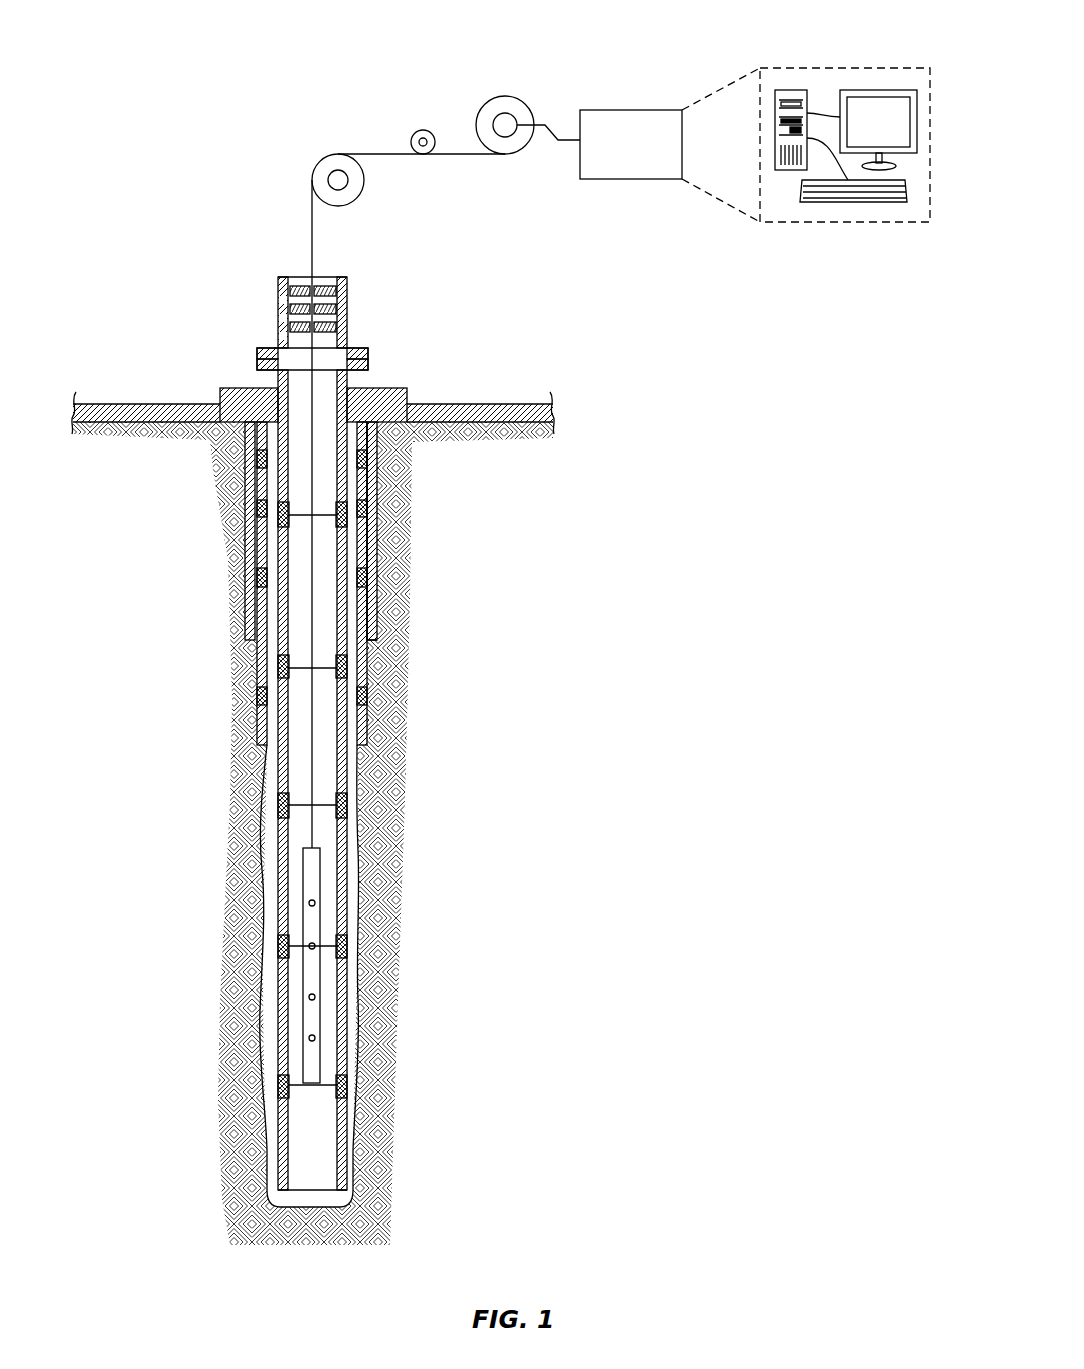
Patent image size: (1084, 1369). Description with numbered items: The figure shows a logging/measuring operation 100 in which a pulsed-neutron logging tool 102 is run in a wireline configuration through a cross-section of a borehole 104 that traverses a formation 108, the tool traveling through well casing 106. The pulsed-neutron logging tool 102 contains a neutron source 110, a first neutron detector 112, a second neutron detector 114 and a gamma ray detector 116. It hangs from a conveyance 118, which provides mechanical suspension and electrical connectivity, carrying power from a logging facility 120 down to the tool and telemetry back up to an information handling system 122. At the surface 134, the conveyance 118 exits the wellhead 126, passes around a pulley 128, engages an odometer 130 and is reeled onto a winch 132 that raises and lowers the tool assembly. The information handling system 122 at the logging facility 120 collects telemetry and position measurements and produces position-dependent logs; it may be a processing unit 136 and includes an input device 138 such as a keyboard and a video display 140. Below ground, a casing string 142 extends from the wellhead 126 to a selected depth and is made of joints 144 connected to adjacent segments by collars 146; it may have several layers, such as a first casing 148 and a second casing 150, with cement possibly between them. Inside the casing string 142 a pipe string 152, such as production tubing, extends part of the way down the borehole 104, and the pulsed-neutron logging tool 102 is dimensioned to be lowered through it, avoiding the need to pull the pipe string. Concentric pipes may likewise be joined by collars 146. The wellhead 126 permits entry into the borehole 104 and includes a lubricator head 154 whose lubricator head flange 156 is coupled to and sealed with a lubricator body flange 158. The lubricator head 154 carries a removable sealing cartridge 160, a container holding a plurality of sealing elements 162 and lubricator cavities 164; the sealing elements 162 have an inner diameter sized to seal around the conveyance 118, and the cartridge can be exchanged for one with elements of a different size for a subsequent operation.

The logging/measuring operation 100 is at (699, 1060).
The pulsed-neutron logging tool 102 is at (312, 984).
The borehole 104 is at (212, 802).
The well casing 106 is at (358, 752).
The formation 108 is at (544, 675).
The neutron source 110 is at (316, 903).
The first neutron detector 112 is at (316, 946).
The second neutron detector 114 is at (316, 997).
The gamma ray detector 116 is at (316, 1038).
The conveyance 118 is at (313, 252).
The logging facility 120 is at (806, 137).
The information handling system 122 is at (640, 110).
The wellhead 126 is at (367, 334).
The pulley 128 is at (314, 168).
The odometer 130 is at (424, 130).
The winch 132 is at (520, 97).
The surface 134 is at (125, 403).
The processing unit 136 is at (790, 90).
The input device 138 is at (850, 202).
The video display 140 is at (878, 90).
The casing string 142 is at (243, 636).
The joint 144 is at (258, 660).
The collar 146 is at (258, 697).
The first casing 148 is at (364, 663).
The second casing 150 is at (372, 618).
The pipe string 152 is at (349, 1148).
The lubricator head 154 is at (414, 357).
The lubricator head flange 156 is at (368, 355).
The lubricator body flange 158 is at (368, 363).
The sealing cartridge 160 is at (330, 276).
The sealing elements 162 is at (334, 308).
The lubricator cavities 164 is at (322, 326).